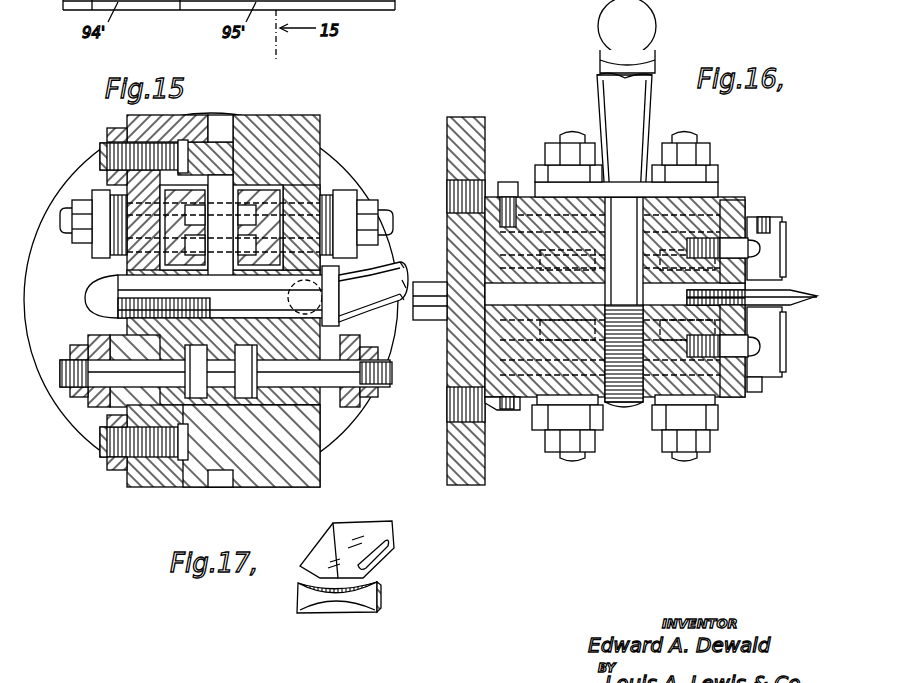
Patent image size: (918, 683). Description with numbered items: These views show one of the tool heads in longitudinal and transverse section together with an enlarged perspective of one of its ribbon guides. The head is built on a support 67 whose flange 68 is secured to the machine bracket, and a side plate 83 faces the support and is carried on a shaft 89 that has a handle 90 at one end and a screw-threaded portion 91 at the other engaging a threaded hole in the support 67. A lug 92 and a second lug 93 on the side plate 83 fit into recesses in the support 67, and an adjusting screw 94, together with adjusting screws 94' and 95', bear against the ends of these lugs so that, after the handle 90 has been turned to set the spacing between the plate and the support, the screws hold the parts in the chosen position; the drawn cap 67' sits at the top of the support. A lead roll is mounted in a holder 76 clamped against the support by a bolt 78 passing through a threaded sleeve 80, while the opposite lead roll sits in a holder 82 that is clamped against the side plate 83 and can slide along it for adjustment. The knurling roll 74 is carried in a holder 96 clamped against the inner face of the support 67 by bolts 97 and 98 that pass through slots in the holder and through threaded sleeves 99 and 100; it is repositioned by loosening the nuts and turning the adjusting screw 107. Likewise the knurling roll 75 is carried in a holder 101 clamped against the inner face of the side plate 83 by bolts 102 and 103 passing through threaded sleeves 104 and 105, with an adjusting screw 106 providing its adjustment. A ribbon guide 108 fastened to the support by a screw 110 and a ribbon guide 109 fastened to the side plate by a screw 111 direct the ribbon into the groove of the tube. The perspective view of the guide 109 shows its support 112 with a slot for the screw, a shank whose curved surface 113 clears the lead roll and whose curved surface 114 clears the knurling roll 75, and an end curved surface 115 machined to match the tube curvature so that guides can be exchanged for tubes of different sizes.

In FIG. 16, the support 67 is at (615, 297).
In FIG. 15, the cap block 67' is at (167, 118).
In FIG. 15, the flange 68 is at (86, 434).
In FIG. 16, the flange 68 is at (478, 122).
In FIG. 16, the knurling roll 74 is at (790, 307).
In FIG. 16, the knurling roll 75 is at (795, 290).
In FIG. 15, the holder 76 is at (170, 187).
In FIG. 15, the bolt 78 is at (63, 213).
In FIG. 15, the threaded sleeve 80 is at (75, 200).
In FIG. 15, the holder 82 is at (262, 190).
In FIG. 15, the side plate 83 is at (305, 130).
In FIG. 16, the side plate 83 is at (465, 272).
In FIG. 15, the shaft 89 is at (335, 322).
In FIG. 16, the shaft 89 is at (722, 190).
In FIG. 15, the handle 90 is at (393, 263).
In FIG. 16, the handle 90 is at (655, 58).
In FIG. 15, the screw-threaded portion 91 is at (95, 290).
In FIG. 16, the screw-threaded portion 91 is at (628, 410).
In FIG. 15, the lug 92 is at (220, 140).
In FIG. 15, the lug 93 is at (222, 476).
In FIG. 15, the adjusting screw 94 is at (130, 154).
In FIG. 16, the adjusting screw 94' is at (611, 447).
In FIG. 15, the adjusting screw 95' is at (129, 461).
In FIG. 15, the holder 96 is at (124, 470).
In FIG. 16, the holder 96 is at (772, 360).
In FIG. 15, the bolt 97 is at (63, 388).
In FIG. 16, the bolt 97 is at (680, 460).
In FIG. 16, the bolt 98 is at (580, 460).
In FIG. 15, the threaded sleeve 99 is at (90, 340).
In FIG. 16, the threaded sleeve 99 is at (712, 432).
In FIG. 16, the threaded sleeve 100 is at (547, 430).
In FIG. 15, the holder 101 is at (252, 452).
In FIG. 16, the holder 101 is at (784, 240).
In FIG. 15, the bolt 102 is at (392, 384).
In FIG. 16, the bolt 102 is at (692, 140).
In FIG. 15, the bolt 103 is at (378, 216).
In FIG. 16, the bolt 103 is at (573, 132).
In FIG. 15, the threaded sleeve 104 is at (364, 404).
In FIG. 16, the threaded sleeve 104 is at (716, 168).
In FIG. 15, the threaded sleeve 105 is at (348, 196).
In FIG. 16, the threaded sleeve 105 is at (540, 165).
In FIG. 16, the adjusting screw 106 is at (509, 182).
In FIG. 16, the adjusting screw 107 is at (511, 412).
In FIG. 16, the ribbon guide 108 is at (735, 400).
In FIG. 16, the ribbon guide 109 is at (736, 208).
In FIG. 17, the ribbon guide 109 is at (397, 530).
In FIG. 16, the screw 110 is at (760, 386).
In FIG. 16, the screw 111 is at (745, 238).
In FIG. 17, the support 112 is at (372, 519).
In FIG. 17, the curved surface 113 is at (315, 582).
In FIG. 17, the curved surface 114 is at (325, 610).
In FIG. 17, the curved surface 115 is at (381, 596).